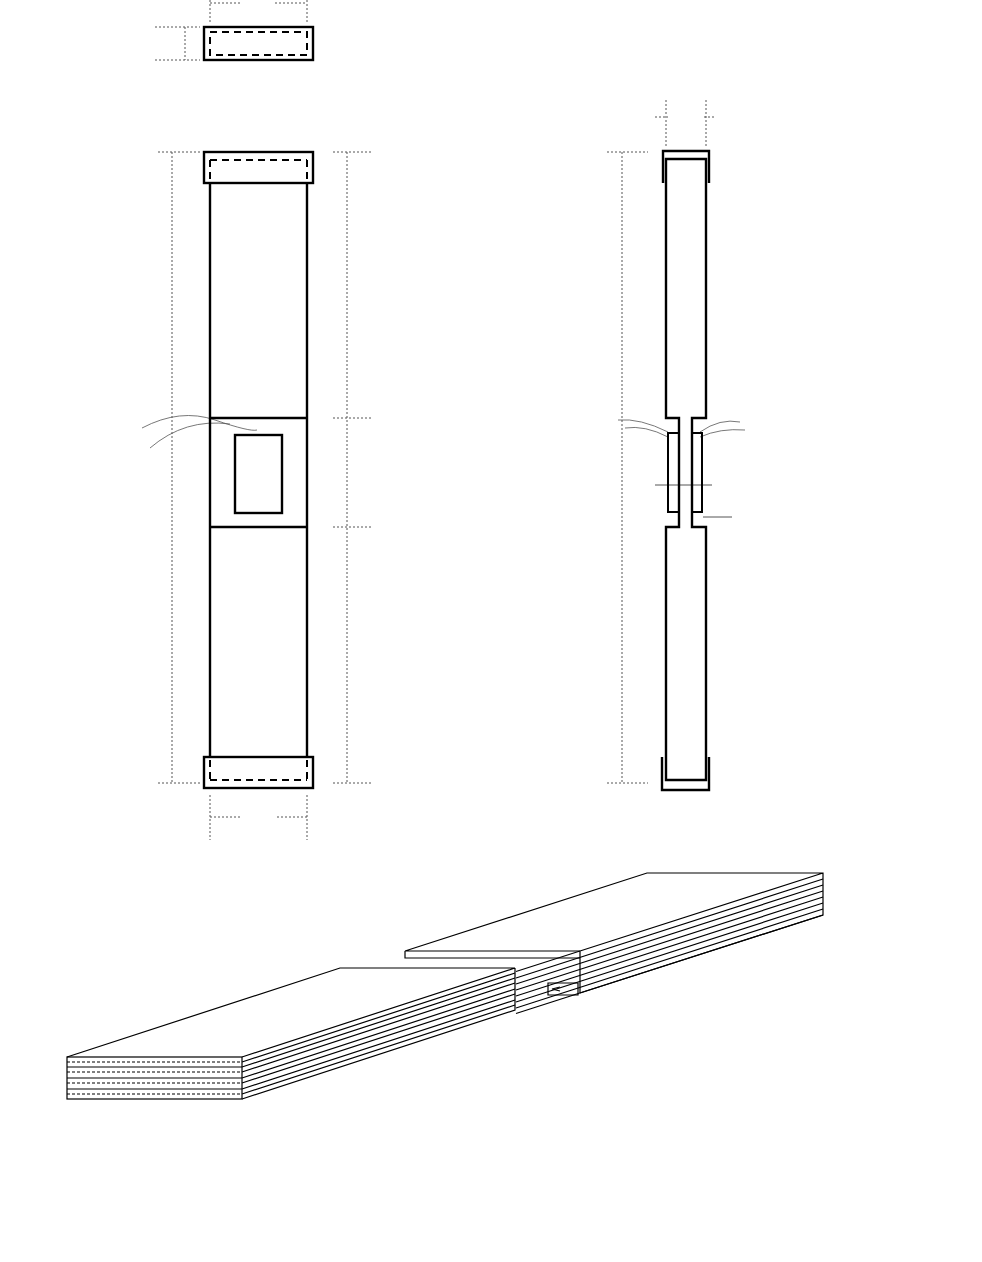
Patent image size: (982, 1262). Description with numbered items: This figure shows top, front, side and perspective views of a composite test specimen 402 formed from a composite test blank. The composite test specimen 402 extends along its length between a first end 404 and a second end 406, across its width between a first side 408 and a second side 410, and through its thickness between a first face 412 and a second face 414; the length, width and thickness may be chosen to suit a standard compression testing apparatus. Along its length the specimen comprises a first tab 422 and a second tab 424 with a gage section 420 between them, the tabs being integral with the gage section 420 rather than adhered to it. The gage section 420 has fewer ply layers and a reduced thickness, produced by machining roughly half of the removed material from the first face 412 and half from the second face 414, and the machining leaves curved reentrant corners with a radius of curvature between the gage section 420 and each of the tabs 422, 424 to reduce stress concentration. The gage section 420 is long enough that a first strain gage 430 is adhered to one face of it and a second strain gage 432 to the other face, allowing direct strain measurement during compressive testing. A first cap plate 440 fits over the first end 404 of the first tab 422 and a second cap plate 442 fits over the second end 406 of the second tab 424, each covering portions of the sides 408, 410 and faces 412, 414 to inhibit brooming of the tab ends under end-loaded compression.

The composite test specimen 402 is at (130, 11).
The first end 404 is at (265, 45).
The second end 406 is at (307, 783).
The first side 408 is at (210, 378).
The second side 410 is at (307, 378).
The first face 412 is at (257, 220).
The second face 414 is at (706, 230).
The gage section 420 is at (543, 461).
The first tab 422 is at (541, 273).
The second tab 424 is at (559, 644).
The first strain gage 430 is at (244, 497).
The second strain gage 432 is at (702, 467).
The first cap plate 440 is at (313, 40).
The second cap plate 442 is at (205, 790).